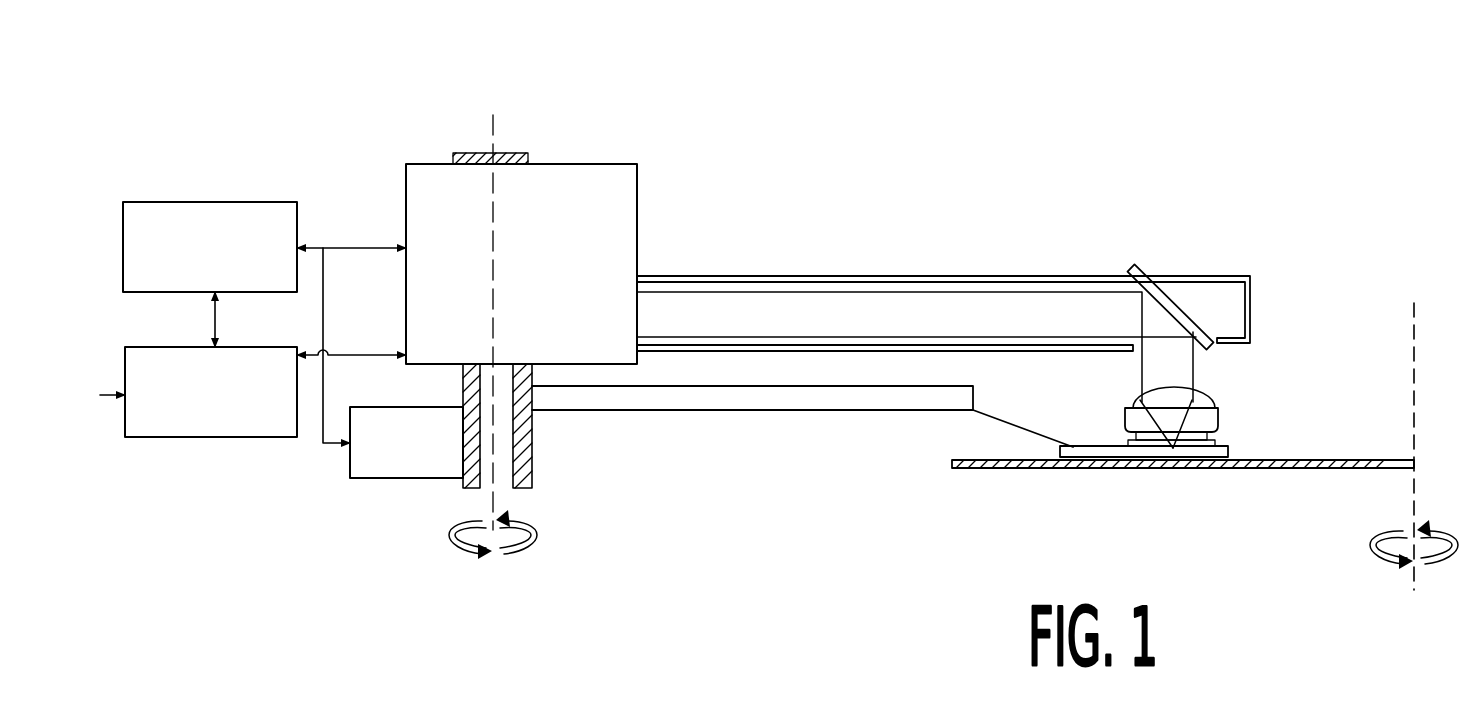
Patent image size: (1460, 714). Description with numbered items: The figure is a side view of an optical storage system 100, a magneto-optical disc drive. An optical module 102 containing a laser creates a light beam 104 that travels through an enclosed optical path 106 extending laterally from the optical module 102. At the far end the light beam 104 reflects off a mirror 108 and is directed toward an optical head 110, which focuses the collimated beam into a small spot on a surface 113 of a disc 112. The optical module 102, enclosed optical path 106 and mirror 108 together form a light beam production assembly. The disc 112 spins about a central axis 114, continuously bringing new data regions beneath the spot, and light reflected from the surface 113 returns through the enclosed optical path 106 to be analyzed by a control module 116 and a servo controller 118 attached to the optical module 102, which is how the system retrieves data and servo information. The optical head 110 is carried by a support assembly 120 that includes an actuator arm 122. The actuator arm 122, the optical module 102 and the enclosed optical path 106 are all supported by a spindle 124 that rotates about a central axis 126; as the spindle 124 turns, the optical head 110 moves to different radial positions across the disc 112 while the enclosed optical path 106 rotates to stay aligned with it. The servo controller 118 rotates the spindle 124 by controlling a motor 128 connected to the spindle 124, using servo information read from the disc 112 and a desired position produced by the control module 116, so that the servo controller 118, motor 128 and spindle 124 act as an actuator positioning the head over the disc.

The optical storage system 100 is at (1032, 89).
The optical module 102 is at (585, 176).
The light beam 104 is at (920, 288).
The enclosed optical path 106 is at (726, 283).
The mirror 108 is at (1135, 268).
The optical head 110 is at (1233, 413).
The disc 112 is at (1090, 469).
The surface 113 is at (1258, 460).
The central axis 114 is at (1414, 584).
The control module 116 is at (190, 437).
The servo controller 118 is at (228, 203).
The support assembly 120 is at (721, 449).
The actuator arm 122 is at (605, 415).
The spindle 124 is at (533, 470).
The central axis 126 is at (494, 126).
The motor 128 is at (370, 478).